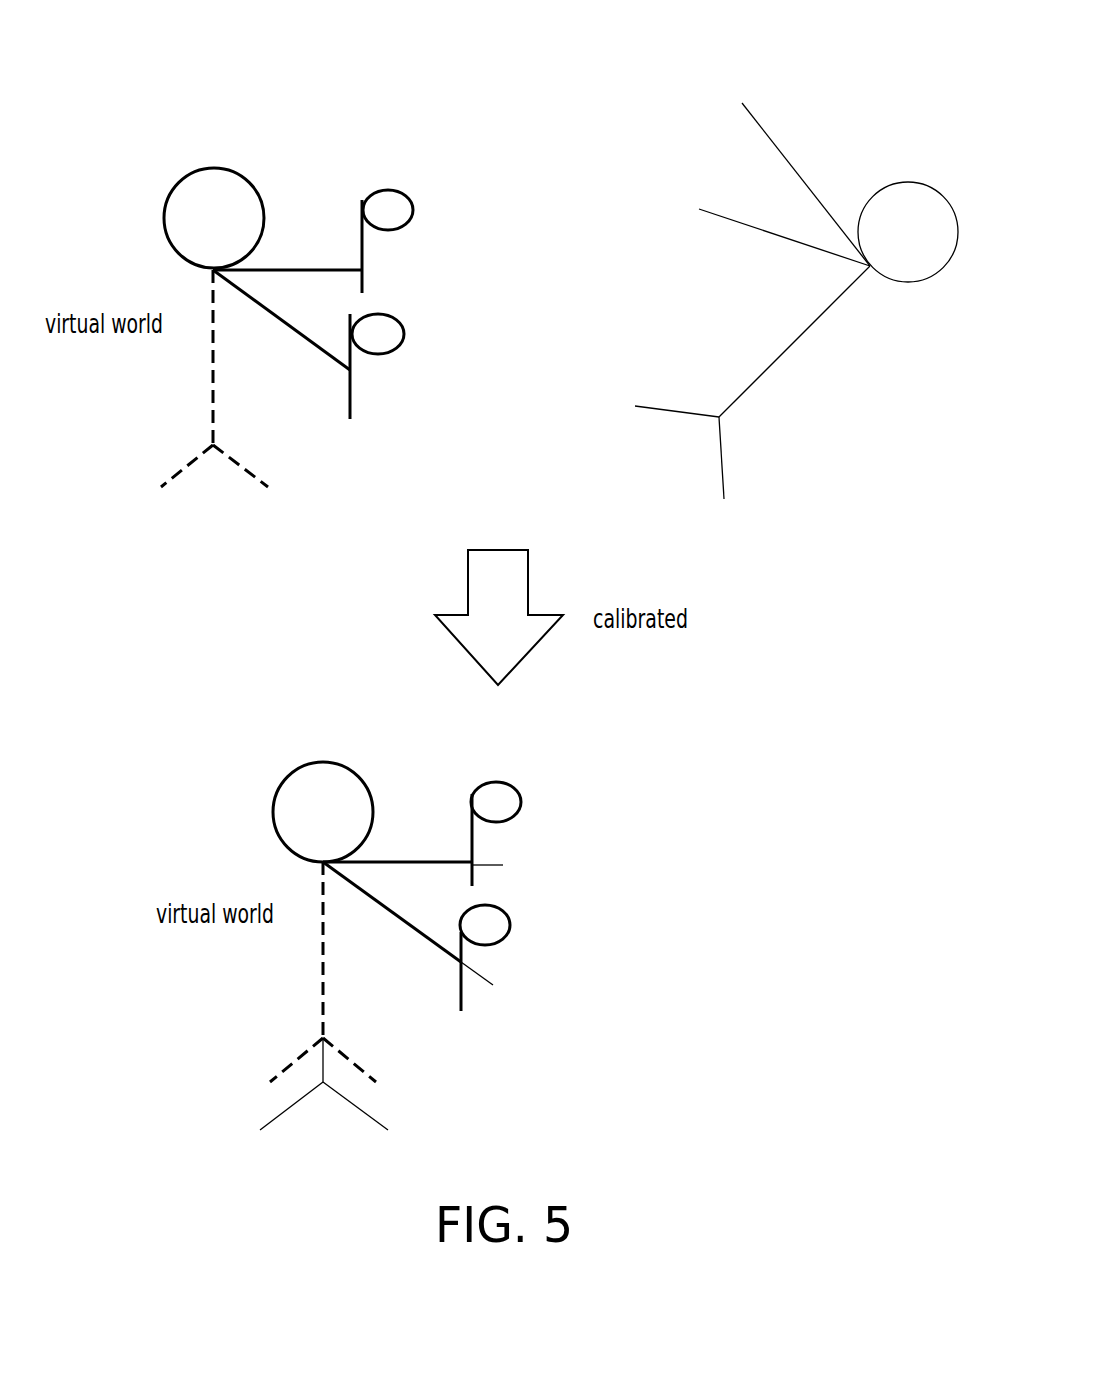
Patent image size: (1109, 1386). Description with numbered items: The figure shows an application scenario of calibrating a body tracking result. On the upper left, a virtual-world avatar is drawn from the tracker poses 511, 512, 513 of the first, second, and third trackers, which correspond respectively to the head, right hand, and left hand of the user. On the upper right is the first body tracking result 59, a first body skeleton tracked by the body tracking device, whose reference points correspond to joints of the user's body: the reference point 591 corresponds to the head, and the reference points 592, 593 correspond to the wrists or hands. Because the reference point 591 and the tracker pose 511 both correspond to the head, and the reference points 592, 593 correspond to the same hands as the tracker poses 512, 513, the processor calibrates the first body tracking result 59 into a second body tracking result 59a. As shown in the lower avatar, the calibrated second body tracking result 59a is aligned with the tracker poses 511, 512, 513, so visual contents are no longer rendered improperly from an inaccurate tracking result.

The tracker pose 511 is at (214, 168).
The tracker pose 512 is at (381, 357).
The tracker pose 513 is at (415, 199).
The first body tracking result 59 is at (796, 263).
The reference point 591 is at (910, 182).
The reference point 592 is at (742, 103).
The reference point 593 is at (699, 209).
The second body tracking result 59a is at (270, 1120).